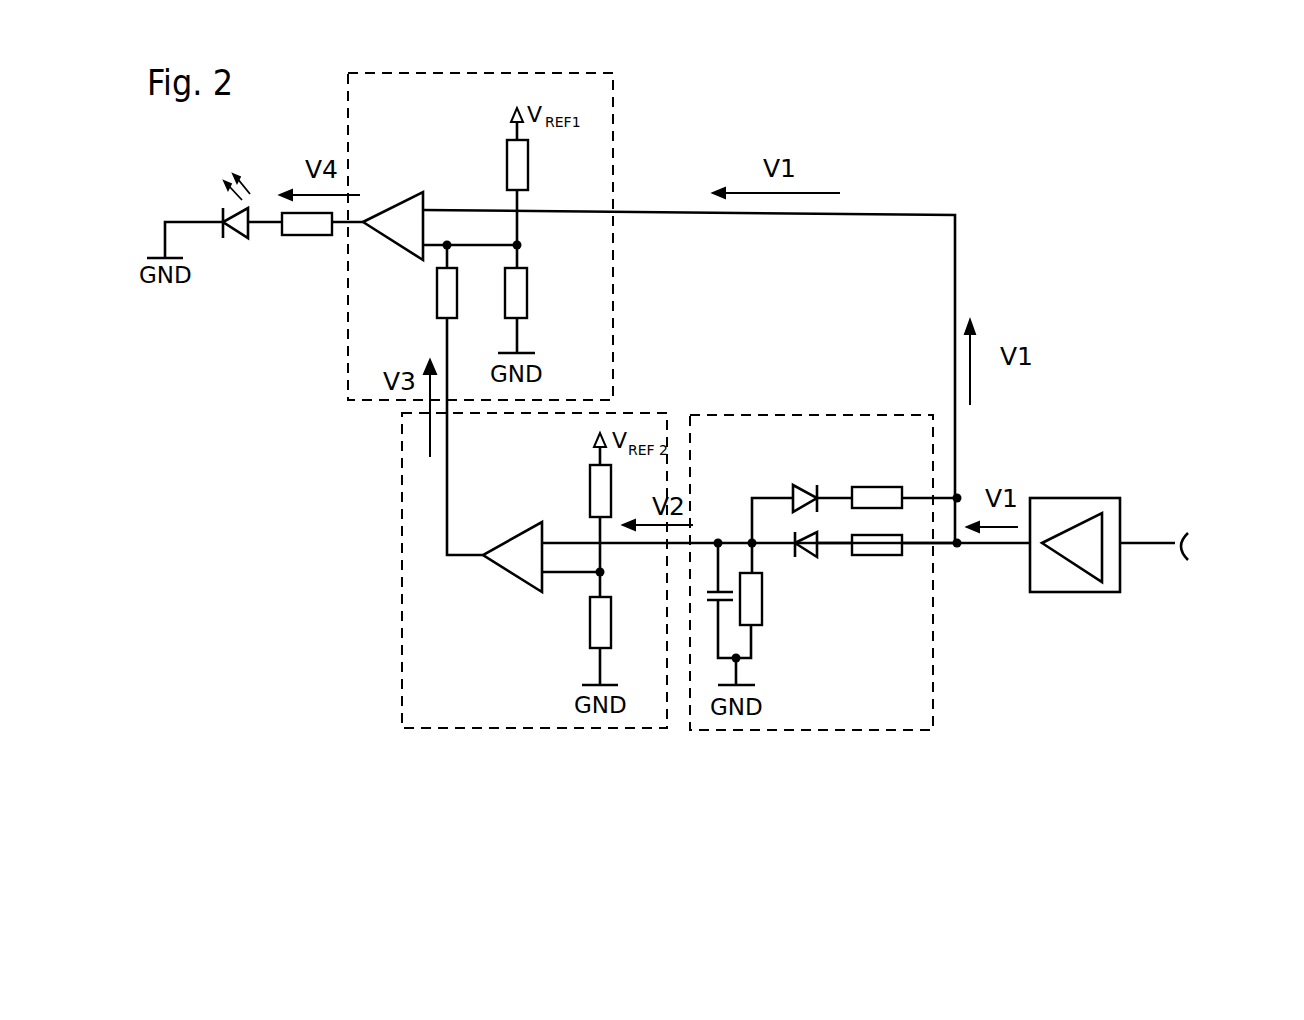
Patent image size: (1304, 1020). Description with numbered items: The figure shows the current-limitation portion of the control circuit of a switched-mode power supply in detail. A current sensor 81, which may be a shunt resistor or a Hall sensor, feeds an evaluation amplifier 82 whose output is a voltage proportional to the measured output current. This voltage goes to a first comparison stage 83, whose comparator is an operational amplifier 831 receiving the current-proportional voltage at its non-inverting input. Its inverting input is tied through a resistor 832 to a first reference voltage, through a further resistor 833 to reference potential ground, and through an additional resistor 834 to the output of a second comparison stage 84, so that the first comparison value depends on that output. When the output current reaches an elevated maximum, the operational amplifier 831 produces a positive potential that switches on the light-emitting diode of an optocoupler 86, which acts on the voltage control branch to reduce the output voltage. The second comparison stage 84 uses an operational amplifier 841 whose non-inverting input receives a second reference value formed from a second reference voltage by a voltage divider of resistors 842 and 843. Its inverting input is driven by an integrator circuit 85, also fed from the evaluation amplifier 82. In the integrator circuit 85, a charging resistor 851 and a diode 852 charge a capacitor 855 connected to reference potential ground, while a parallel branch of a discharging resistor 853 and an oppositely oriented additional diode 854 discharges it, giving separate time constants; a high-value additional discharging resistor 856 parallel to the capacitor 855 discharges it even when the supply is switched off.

The current sensor 81 is at (1230, 553).
The evaluation amplifier 82 is at (1060, 498).
The first comparison stage 83 is at (613, 142).
The operational amplifier 831 is at (398, 203).
The resistor 832 is at (508, 167).
The further resistor 833 is at (525, 293).
The additional resistor 834 is at (437, 295).
The second comparison stage 84 is at (482, 730).
The operational amplifier 841 is at (502, 543).
The resistor 842 is at (590, 492).
The resistor 843 is at (590, 612).
The integrator circuit 85 is at (863, 730).
The charging resistor 851 is at (875, 557).
The diode 852 is at (807, 557).
The discharging resistor 853 is at (882, 487).
The additional diode 854 is at (807, 487).
The capacitor 855 is at (701, 582).
The additional discharging resistor 856 is at (762, 608).
The optocoupler 86 is at (238, 233).